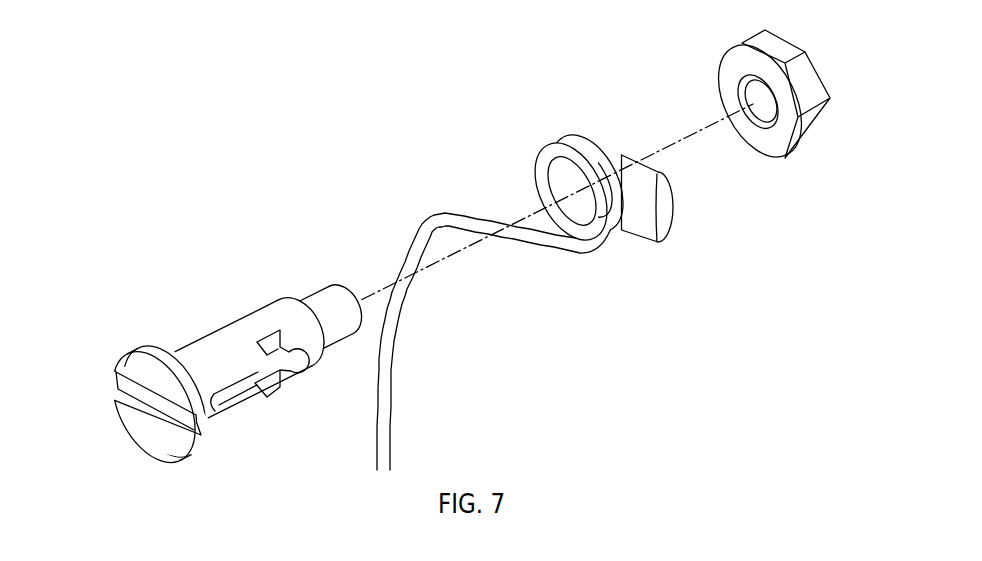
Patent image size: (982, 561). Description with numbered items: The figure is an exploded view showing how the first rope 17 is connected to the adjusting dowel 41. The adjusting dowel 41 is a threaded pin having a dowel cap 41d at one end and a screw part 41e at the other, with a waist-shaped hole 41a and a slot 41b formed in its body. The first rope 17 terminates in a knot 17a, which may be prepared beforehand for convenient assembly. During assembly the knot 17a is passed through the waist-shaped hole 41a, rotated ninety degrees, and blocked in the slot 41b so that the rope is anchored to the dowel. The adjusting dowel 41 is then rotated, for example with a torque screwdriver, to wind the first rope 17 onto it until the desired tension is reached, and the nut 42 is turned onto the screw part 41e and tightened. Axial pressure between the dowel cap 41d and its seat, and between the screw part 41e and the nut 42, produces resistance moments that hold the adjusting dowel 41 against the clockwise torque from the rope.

The adjusting dowel 41 is at (234, 354).
The waist-shaped hole 41a is at (236, 395).
The slot 41b is at (277, 388).
The dowel cap 41d is at (133, 428).
The screws 41e is at (330, 302).
The first rope 17 is at (525, 300).
The knot 17a is at (648, 230).
The nut 42 is at (805, 142).